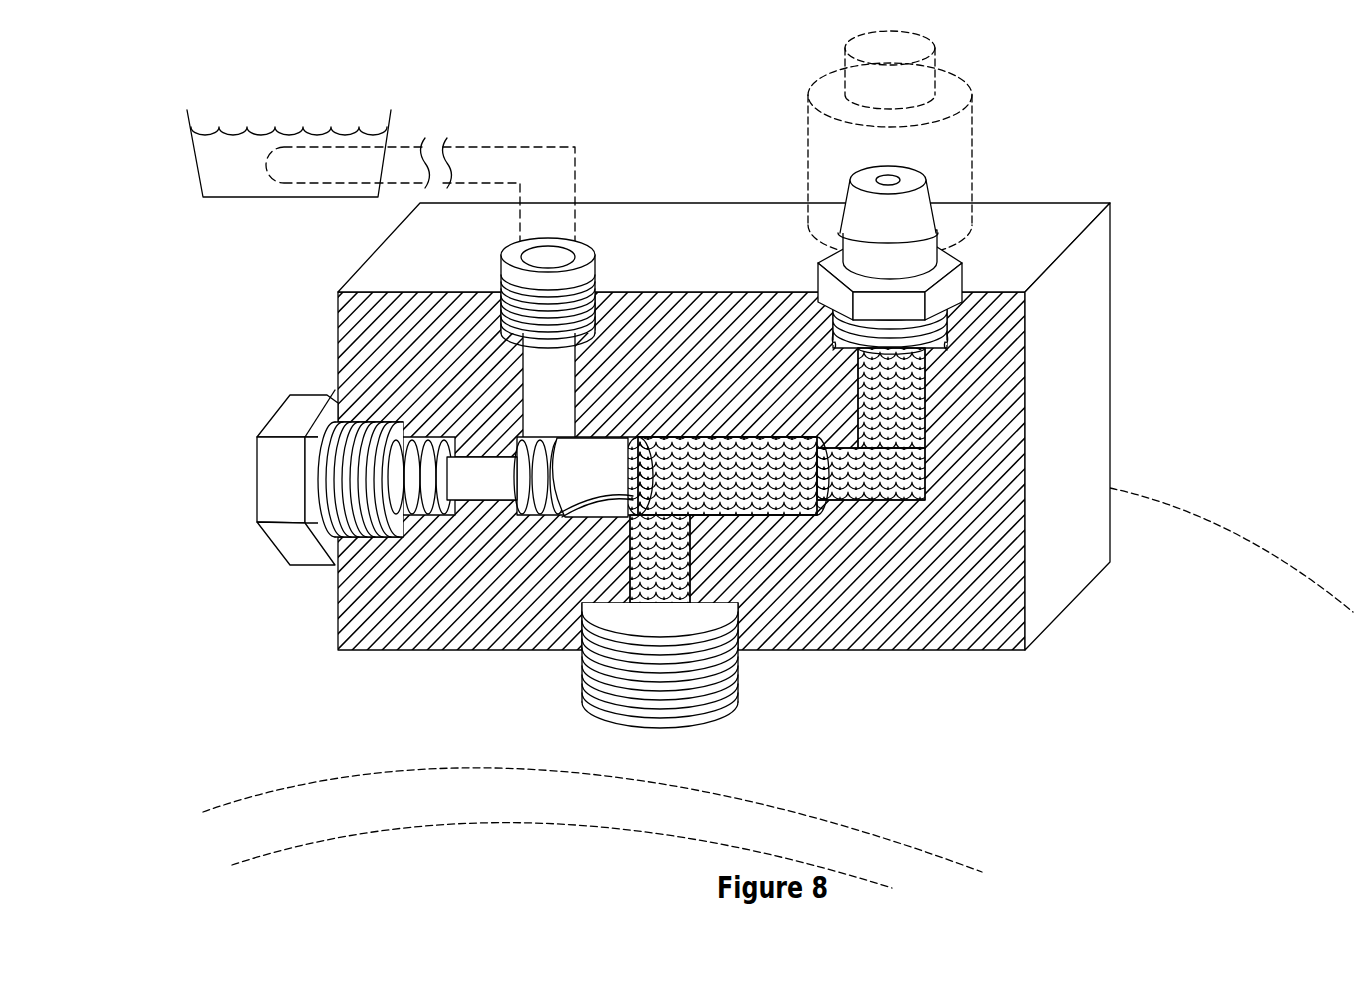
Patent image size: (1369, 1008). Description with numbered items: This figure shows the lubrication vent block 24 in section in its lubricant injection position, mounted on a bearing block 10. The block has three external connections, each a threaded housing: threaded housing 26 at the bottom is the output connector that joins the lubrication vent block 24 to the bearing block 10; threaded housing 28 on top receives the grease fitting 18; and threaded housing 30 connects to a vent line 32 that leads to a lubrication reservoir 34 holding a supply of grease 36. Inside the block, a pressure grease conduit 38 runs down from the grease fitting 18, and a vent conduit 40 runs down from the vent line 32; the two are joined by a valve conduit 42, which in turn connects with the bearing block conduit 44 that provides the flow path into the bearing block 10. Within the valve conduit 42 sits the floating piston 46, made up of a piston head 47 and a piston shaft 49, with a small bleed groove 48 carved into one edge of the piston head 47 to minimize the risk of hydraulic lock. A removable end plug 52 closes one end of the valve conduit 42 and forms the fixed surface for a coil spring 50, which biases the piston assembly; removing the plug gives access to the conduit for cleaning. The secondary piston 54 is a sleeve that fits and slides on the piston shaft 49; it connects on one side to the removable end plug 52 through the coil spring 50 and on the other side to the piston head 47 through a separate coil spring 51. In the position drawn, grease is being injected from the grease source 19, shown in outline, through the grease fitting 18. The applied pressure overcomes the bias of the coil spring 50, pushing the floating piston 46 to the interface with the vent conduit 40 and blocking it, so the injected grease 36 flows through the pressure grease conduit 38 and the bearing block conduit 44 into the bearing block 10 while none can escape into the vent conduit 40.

The bearing block 10 is at (1197, 483).
The grease fitting 18 is at (925, 210).
The grease source 19 is at (972, 124).
The lubrication vent block 24 is at (737, 183).
The threaded housing 26 is at (728, 712).
The threaded housing 28 is at (947, 313).
The threaded housing 30 is at (592, 254).
The vent line 32 is at (565, 162).
The lubrication reservoir 34 is at (278, 198).
The grease 36 is at (312, 128).
The pressure grease conduit 38 is at (920, 387).
The vent conduit 40 is at (532, 373).
The valve conduit 42 is at (790, 488).
The bearing block conduit 44 is at (680, 563).
The floating piston 46 is at (498, 596).
The piston head 47 is at (593, 485).
The bleed groove 48 is at (615, 497).
The piston shaft 49 is at (487, 483).
The coil spring 50 is at (445, 512).
The coil spring 51 is at (548, 508).
The removable end plug 52 is at (292, 542).
The secondary piston 54 is at (468, 512).